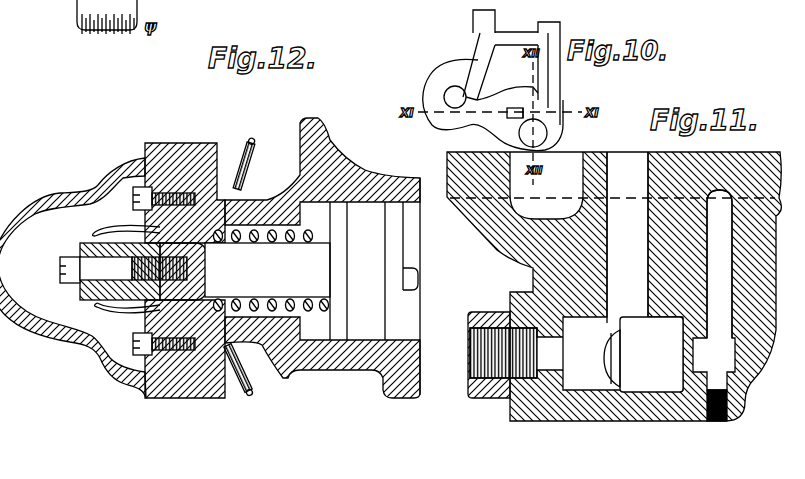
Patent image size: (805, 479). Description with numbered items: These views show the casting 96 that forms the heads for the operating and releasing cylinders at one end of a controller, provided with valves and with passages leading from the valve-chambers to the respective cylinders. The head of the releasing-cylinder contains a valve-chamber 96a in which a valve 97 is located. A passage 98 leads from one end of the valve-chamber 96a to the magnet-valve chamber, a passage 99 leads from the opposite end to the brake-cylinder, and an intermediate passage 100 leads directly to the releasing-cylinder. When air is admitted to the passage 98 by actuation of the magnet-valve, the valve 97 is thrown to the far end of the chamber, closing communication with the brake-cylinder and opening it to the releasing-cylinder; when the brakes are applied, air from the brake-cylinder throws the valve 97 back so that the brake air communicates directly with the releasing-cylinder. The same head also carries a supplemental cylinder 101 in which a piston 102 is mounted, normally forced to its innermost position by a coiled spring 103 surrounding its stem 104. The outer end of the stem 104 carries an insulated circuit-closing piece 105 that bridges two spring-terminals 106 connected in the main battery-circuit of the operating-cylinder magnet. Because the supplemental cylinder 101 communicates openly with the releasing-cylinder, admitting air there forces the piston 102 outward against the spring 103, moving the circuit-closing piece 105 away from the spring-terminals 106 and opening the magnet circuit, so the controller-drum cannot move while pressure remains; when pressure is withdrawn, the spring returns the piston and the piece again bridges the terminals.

In FIG. 10, the casting 96 is at (493, 80).
In FIG. 11, the casting 96 is at (614, 286).
In FIG. 11, the valve-chamber 96a is at (603, 358).
In FIG. 11, the valve 97 is at (651, 354).
In FIG. 11, the passage 98 is at (719, 305).
In FIG. 11, the passage 99 is at (480, 352).
In FIG. 11, the intermediate passage 100 is at (627, 237).
In FIG. 12, the supplemental cylinder 101 is at (324, 258).
In FIG. 12, the piston 102 is at (356, 271).
In FIG. 12, the coiled spring 103 is at (268, 355).
In FIG. 12, the stem 104 is at (267, 270).
In FIG. 12, the circuit-closing piece 105 is at (100, 302).
In FIG. 12, the spring-terminals 106 is at (143, 271).